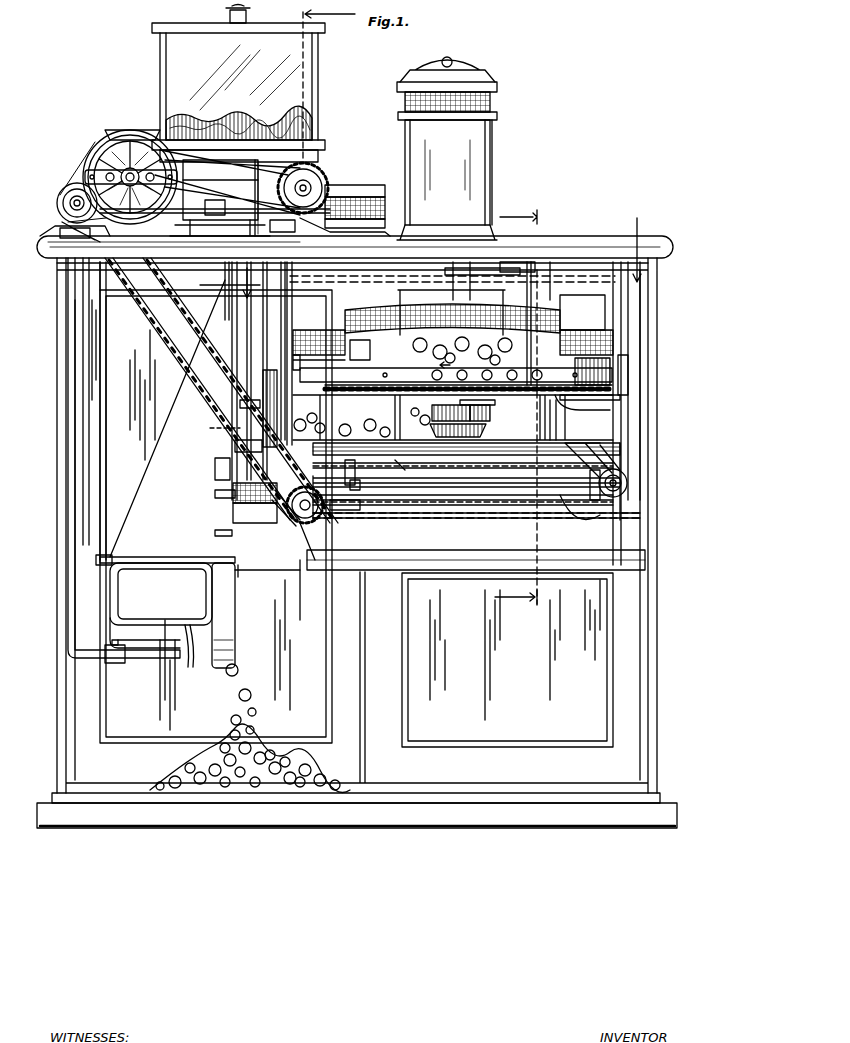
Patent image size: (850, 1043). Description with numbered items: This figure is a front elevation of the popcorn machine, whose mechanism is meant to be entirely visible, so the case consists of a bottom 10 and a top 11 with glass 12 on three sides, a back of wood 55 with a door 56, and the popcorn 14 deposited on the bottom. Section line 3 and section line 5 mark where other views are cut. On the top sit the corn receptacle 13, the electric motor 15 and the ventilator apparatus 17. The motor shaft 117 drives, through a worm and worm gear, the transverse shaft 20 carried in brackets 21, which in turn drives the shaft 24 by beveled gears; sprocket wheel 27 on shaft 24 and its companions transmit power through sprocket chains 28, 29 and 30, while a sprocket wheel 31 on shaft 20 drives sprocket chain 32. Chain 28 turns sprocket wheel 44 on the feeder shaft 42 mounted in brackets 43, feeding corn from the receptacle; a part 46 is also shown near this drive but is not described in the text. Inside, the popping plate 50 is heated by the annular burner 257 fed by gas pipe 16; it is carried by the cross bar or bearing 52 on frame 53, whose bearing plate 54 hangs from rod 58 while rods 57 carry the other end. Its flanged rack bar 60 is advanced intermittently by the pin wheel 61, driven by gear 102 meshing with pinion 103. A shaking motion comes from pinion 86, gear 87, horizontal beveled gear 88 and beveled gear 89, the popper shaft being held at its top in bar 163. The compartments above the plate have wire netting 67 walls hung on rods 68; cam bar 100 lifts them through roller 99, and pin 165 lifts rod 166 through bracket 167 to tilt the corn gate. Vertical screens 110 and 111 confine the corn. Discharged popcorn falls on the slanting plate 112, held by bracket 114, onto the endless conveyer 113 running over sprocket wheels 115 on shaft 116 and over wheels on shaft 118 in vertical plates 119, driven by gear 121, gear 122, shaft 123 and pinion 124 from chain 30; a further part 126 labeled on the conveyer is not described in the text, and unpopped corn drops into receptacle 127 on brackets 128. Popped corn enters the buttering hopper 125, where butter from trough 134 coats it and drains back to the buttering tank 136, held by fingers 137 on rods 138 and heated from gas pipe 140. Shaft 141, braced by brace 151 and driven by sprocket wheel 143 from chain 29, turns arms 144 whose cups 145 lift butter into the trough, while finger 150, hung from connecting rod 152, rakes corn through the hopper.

The section line 3— 3 is at (321, 16).
The section line 5— 5 is at (441, 263).
The bottom 10 is at (540, 816).
The top 11 is at (587, 241).
The glass 12 is at (357, 525).
The corn receptacle 13 is at (292, 65).
The popcorn 14 is at (240, 128).
The electric motor 15 is at (100, 152).
The gas pipe 16 is at (70, 587).
The ventilator apparatus 17 is at (447, 148).
The transverse shaft 20 is at (220, 198).
The brackets 21 is at (40, 246).
The shaft 24 is at (58, 204).
The sprocket wheel 27 is at (62, 228).
The sprocket chain 28 is at (265, 185).
The sprocket chain 29 is at (83, 440).
The sprocket chain 30 is at (221, 390).
The sprocket wheel 31 is at (255, 192).
The sprocket chain 32 is at (250, 371).
The shaft 42 is at (325, 190).
The brackets 43 is at (325, 226).
The sprocket wheel 44 is at (316, 176).
The bearing 46 is at (283, 230).
The popping plate 50 is at (625, 367).
The cross bar or bearing 52 is at (261, 371).
The frame 53 is at (358, 350).
The bearing plate 54 is at (560, 417).
The wood 55 is at (495, 660).
The door 56 is at (325, 628).
The rods 57 is at (620, 312).
The rod 58 is at (268, 290).
The flanged rack bar 60 is at (622, 390).
The pin wheel 61 is at (310, 400).
The wire netting 67 is at (675, 322).
The rods 68 is at (610, 303).
The pinion 86 is at (490, 413).
The gear 87 is at (432, 413).
The horizontal beveled gear 88 is at (486, 430).
The beveled gear 89 is at (466, 447).
The roller 99 is at (300, 364).
The cam bar 100 is at (456, 368).
The gear 102 is at (253, 387).
The pinion 103 is at (215, 468).
The vertical screen 110 is at (274, 354).
The vertical screen 111 is at (660, 372).
The slanting plate 112 is at (513, 448).
The endless conveyer 113 is at (432, 505).
The bracket 114 is at (620, 468).
The sprocket wheels 115 is at (628, 490).
The shaft 116 is at (628, 482).
The motor shaft 117 is at (100, 170).
The shaft 118 is at (341, 487).
The vertical plates 119 is at (320, 472).
The gear 121 is at (288, 522).
The gear 122 is at (305, 530).
The shaft 123 is at (318, 515).
The pinion 124 is at (335, 506).
The buttering hopper 125 is at (278, 525).
The guide 126 is at (395, 463).
The receptacle 127 is at (476, 437).
The brackets 128 is at (572, 505).
The trough 134 is at (225, 537).
The buttering tank 136 is at (223, 586).
The fingers 137 is at (185, 652).
The rods 138 is at (103, 338).
The gas pipe 140 is at (140, 660).
The shaft 141 is at (147, 557).
The sprocket wheel 143 is at (95, 433).
The radially extending arms 144 is at (215, 505).
The cups 145 is at (235, 445).
The finger 150 is at (209, 428).
The brace 151 is at (170, 430).
The connecting rod 152 is at (216, 300).
The bar 163 is at (482, 281).
The pin 165 is at (605, 375).
The rod 166 is at (546, 323).
The bracket 167 is at (517, 268).
The annular burner 257 is at (580, 410).